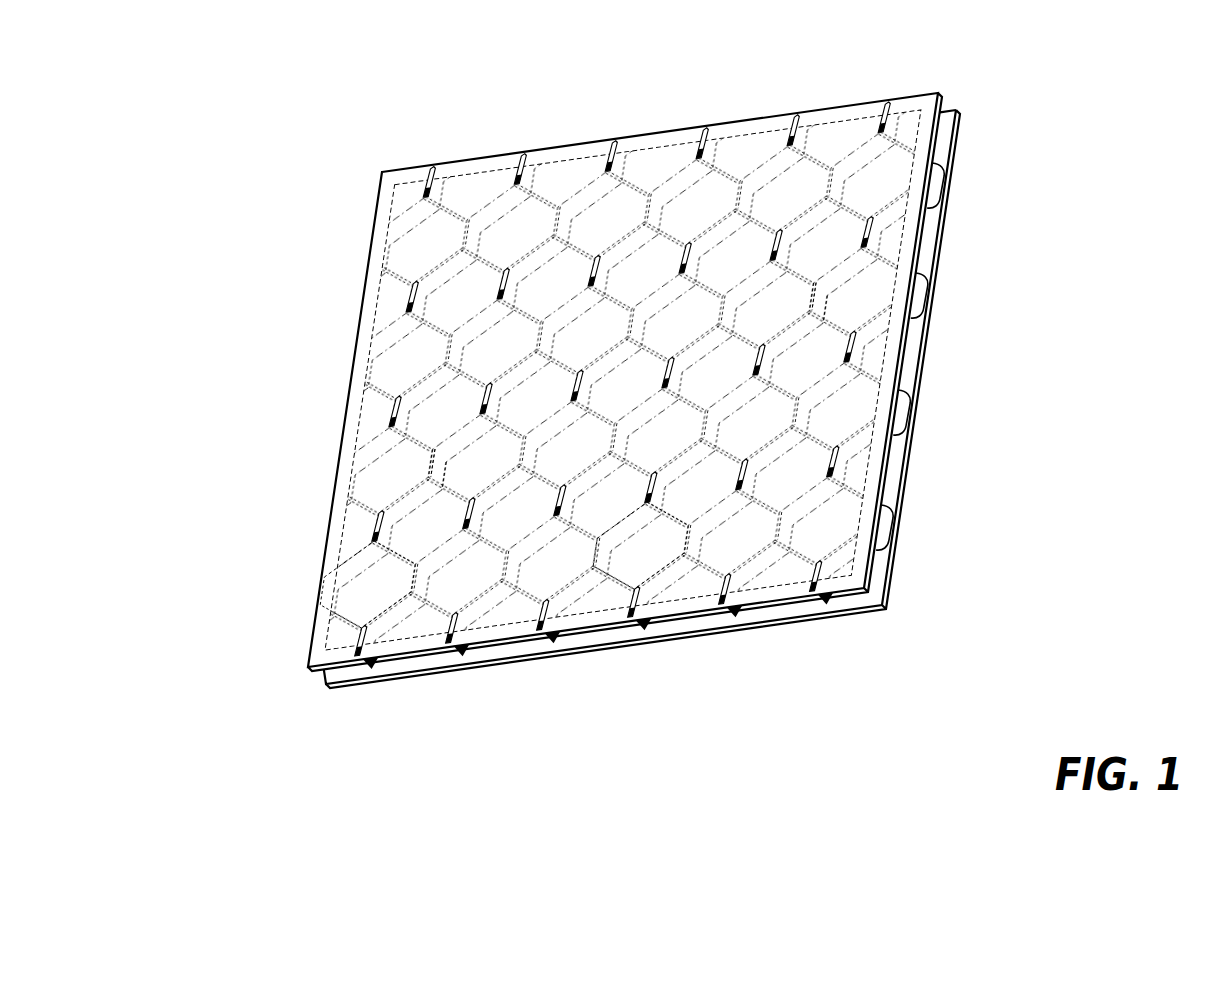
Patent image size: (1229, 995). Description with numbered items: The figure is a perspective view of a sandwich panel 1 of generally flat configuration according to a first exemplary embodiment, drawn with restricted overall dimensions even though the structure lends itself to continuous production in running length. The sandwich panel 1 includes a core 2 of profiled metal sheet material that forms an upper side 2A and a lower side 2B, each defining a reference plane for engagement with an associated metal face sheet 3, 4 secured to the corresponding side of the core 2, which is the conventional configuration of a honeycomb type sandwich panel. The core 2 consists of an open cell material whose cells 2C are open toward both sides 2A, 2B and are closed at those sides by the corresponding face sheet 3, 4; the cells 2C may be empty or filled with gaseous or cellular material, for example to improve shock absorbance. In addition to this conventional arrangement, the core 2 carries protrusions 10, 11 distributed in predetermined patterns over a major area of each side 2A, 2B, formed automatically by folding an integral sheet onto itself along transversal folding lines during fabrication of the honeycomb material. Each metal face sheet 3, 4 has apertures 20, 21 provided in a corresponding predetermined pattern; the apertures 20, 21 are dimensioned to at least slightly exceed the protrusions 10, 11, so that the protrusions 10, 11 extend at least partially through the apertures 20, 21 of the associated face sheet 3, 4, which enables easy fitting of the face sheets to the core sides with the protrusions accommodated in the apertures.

The sandwich panel 1 is at (638, 396).
The core 2 is at (635, 417).
The upper side of the core 2A is at (383, 608).
The lower side of the core 2B is at (878, 548).
The cells 2C is at (648, 545).
The metal face sheet 3 is at (914, 253).
The metal face sheet 4 is at (951, 146).
The protrusions 10 is at (407, 298).
The protrusions 11 is at (450, 478).
The apertures 20 is at (390, 413).
The apertures 21 is at (830, 308).